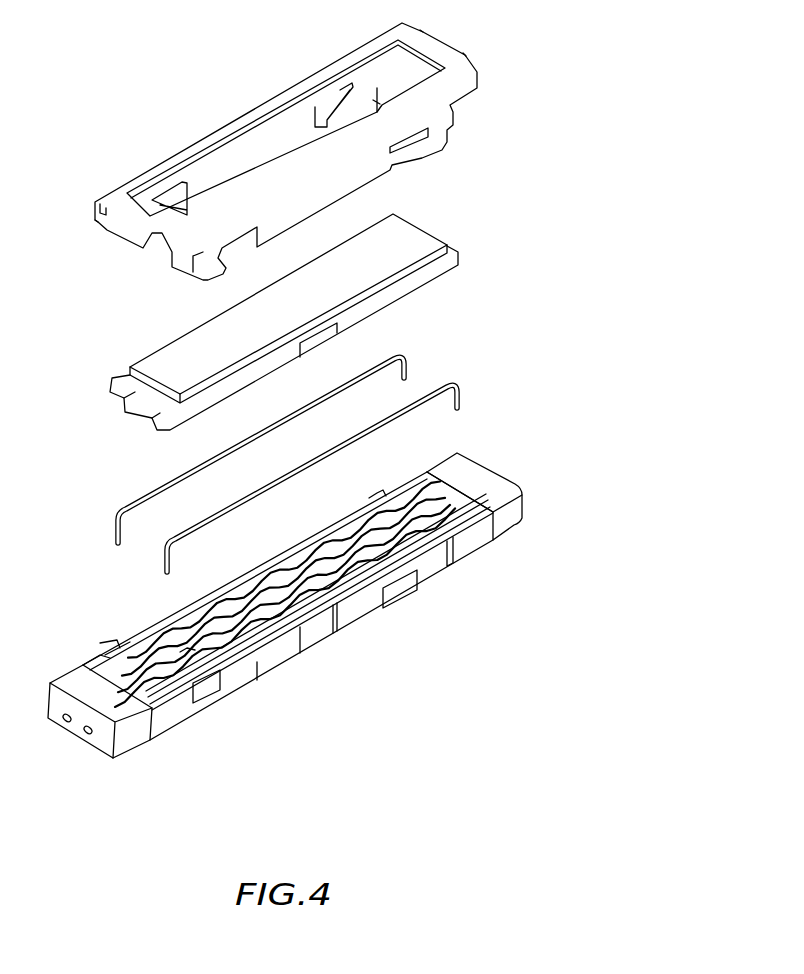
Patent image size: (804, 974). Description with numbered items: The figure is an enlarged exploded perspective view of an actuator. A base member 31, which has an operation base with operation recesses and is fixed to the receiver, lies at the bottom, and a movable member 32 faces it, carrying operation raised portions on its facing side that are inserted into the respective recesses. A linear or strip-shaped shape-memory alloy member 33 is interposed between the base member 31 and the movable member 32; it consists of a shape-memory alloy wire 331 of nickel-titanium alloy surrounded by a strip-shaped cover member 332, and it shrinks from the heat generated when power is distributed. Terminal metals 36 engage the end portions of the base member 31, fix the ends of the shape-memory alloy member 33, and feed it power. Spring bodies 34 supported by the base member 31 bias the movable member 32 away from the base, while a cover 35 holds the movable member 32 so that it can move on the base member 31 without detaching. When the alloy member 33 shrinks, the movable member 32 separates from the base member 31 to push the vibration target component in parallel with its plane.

The base member 31 is at (363, 607).
The movable member 32 is at (158, 367).
The shape-memory alloy member 33 is at (160, 657).
The shape-memory alloy wire 331 is at (82, 663).
The cover member 332 is at (187, 648).
The spring bodies 34 is at (142, 505).
The cover 35 is at (276, 105).
The terminal metals 36 is at (515, 503).